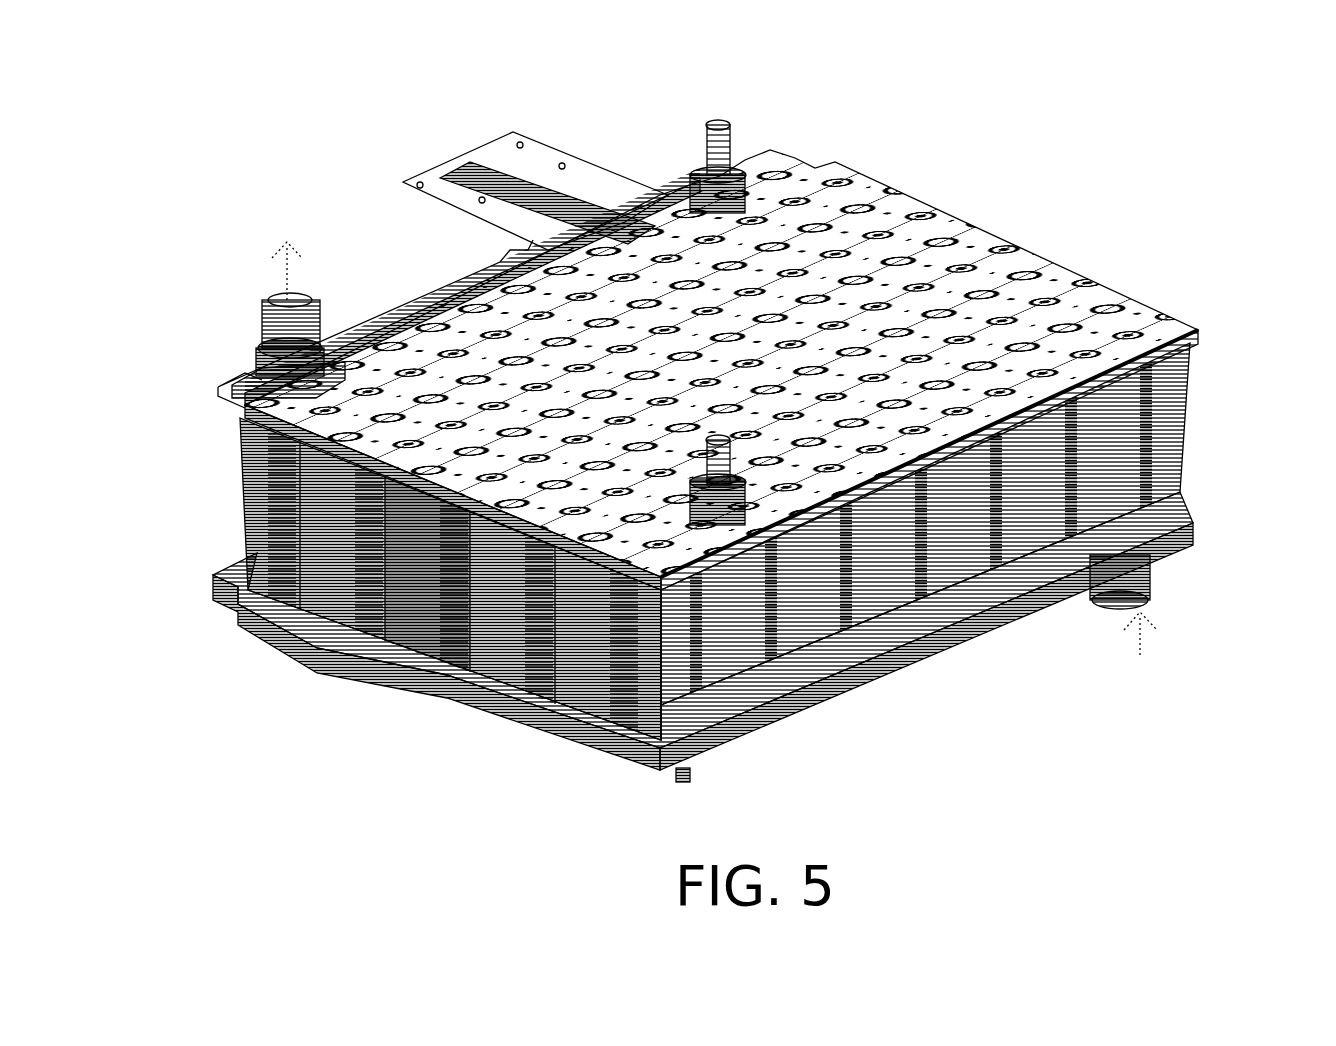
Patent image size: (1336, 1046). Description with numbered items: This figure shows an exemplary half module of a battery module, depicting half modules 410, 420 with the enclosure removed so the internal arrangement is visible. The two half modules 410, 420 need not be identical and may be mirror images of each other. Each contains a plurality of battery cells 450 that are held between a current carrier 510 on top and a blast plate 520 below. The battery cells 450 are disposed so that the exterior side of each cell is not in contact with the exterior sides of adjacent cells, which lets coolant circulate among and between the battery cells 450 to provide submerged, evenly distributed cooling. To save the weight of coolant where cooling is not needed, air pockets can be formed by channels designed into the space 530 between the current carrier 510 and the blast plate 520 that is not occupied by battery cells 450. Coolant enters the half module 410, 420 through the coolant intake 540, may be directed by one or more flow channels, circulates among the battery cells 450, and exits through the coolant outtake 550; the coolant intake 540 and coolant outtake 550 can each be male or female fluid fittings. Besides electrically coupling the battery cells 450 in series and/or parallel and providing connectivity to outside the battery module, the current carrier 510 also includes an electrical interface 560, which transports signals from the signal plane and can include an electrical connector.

The half module 410 is at (372, 122).
The half module 420 is at (736, 437).
The battery cell 450 is at (410, 608).
The current carrier 510 is at (967, 228).
The blast plate 520 is at (897, 672).
The space 530 is at (770, 581).
The coolant intake 540 is at (1120, 598).
The coolant outtake 550 is at (293, 293).
The electrical interface 560 is at (555, 167).